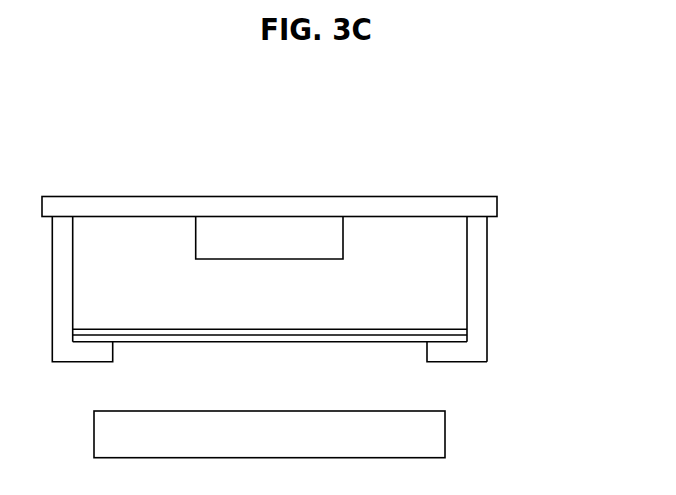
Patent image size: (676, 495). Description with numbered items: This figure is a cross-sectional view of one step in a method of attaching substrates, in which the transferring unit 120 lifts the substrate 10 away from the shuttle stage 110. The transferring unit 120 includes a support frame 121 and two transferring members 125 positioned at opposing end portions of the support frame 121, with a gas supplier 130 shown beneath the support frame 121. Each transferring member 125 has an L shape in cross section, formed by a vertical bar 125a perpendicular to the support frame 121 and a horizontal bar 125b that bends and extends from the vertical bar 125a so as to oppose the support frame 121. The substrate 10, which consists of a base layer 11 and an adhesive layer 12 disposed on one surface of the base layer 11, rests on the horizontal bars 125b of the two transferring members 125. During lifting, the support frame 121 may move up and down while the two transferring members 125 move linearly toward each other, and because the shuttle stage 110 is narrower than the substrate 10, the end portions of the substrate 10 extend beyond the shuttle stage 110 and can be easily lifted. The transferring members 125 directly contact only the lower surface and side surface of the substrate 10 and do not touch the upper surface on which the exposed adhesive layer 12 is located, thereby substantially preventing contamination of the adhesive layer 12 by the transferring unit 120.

The substrate 10 is at (552, 320).
The base layer 11 is at (467, 338).
The adhesive layer 12 is at (467, 330).
The shuttle stage 110 is at (438, 433).
The transferring unit 120 is at (387, 112).
The support frame 121 is at (378, 207).
The transferring member 125 is at (502, 153).
The vertical bar 125a is at (478, 262).
The horizontal bar 125b is at (441, 353).
The gas supplier 130 is at (268, 238).